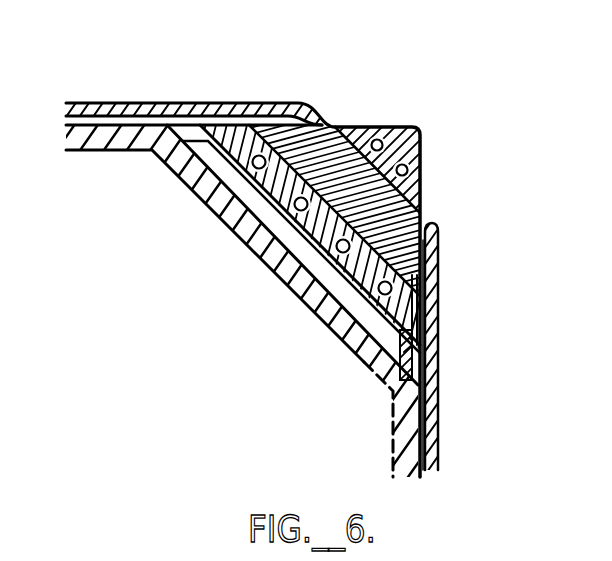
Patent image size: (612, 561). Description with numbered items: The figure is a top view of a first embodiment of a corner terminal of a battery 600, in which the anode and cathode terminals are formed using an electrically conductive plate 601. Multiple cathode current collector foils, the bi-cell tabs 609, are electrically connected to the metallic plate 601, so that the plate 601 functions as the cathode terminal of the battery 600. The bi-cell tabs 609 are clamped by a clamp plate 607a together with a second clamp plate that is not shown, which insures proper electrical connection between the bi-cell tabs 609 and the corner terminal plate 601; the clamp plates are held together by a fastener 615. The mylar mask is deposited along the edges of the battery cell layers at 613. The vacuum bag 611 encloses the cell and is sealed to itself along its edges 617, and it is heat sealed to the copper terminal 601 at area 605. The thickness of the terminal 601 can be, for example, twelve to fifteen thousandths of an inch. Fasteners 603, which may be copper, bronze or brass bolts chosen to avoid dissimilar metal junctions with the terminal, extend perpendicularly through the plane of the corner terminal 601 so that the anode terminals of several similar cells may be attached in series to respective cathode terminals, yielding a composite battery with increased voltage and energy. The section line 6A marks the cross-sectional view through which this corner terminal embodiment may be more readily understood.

The battery 600 is at (235, 58).
The electrically conductive plate 601 is at (422, 142).
The fasteners 603 is at (423, 170).
The heat seal area 605 is at (421, 196).
The clamp plate 607a is at (418, 312).
The cathode current collector foils 609 is at (414, 360).
The vacuum bag 611 is at (440, 398).
The mylar mask 613 is at (143, 147).
The fastener 615 is at (363, 357).
The edges 617 is at (143, 102).
The section line 6A is at (420, 128).